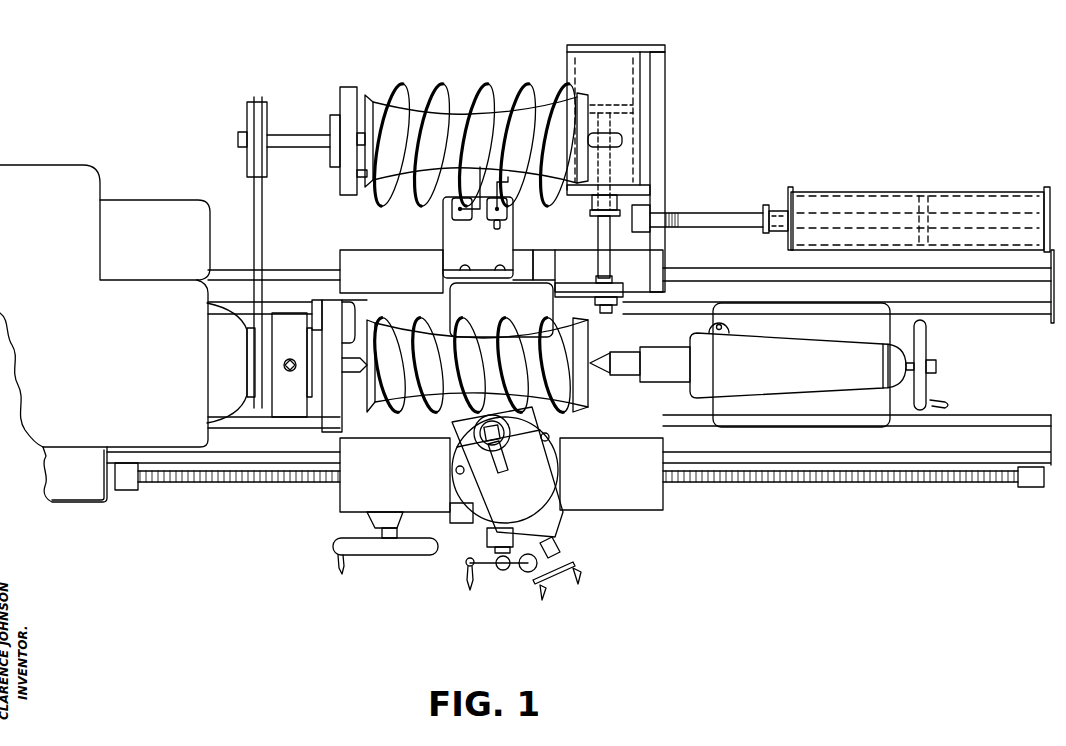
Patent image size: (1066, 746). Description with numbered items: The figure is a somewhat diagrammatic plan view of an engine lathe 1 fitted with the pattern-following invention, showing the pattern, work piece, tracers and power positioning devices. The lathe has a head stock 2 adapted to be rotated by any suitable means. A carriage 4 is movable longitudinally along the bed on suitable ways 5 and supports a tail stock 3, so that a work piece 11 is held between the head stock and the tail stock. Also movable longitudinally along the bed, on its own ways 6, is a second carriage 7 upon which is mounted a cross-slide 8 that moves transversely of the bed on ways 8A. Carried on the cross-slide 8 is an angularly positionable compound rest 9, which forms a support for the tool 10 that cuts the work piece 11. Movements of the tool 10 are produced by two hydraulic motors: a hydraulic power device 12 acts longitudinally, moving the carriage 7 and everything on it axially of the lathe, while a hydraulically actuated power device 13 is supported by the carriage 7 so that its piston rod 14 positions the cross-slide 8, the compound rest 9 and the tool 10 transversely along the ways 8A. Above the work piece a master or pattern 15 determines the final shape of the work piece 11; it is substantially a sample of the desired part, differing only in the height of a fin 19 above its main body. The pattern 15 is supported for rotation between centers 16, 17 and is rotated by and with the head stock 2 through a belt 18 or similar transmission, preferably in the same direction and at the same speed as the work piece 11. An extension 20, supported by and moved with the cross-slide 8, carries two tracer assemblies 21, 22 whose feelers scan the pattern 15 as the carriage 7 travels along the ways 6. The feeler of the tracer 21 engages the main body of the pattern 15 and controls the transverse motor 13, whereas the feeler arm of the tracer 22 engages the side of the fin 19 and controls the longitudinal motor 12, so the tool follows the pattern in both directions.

The engine lathe 1 is at (106, 361).
The head stock 2 is at (307, 366).
The tail stock 3 is at (612, 348).
The carriage 4 is at (819, 365).
The ways 5 is at (985, 318).
The ways 6 is at (705, 267).
The carriage 7 is at (501, 386).
The cross-slide 8 is at (501, 310).
The ways 8A is at (542, 262).
The compound rest 9 is at (527, 498).
The tool 10 is at (494, 364).
The work piece 11 is at (590, 403).
The hydraulic power device 12 is at (887, 191).
The hydraulically actuated power device 13 is at (596, 167).
The piston rod 14 is at (598, 228).
The pattern 15 is at (373, 95).
The center 16 is at (362, 138).
The center 17 is at (593, 147).
The belt 18 is at (265, 217).
The fin 19 is at (462, 130).
The extension 20 is at (476, 222).
The tracer assembly 21 is at (448, 219).
The tracer assembly 22 is at (508, 213).